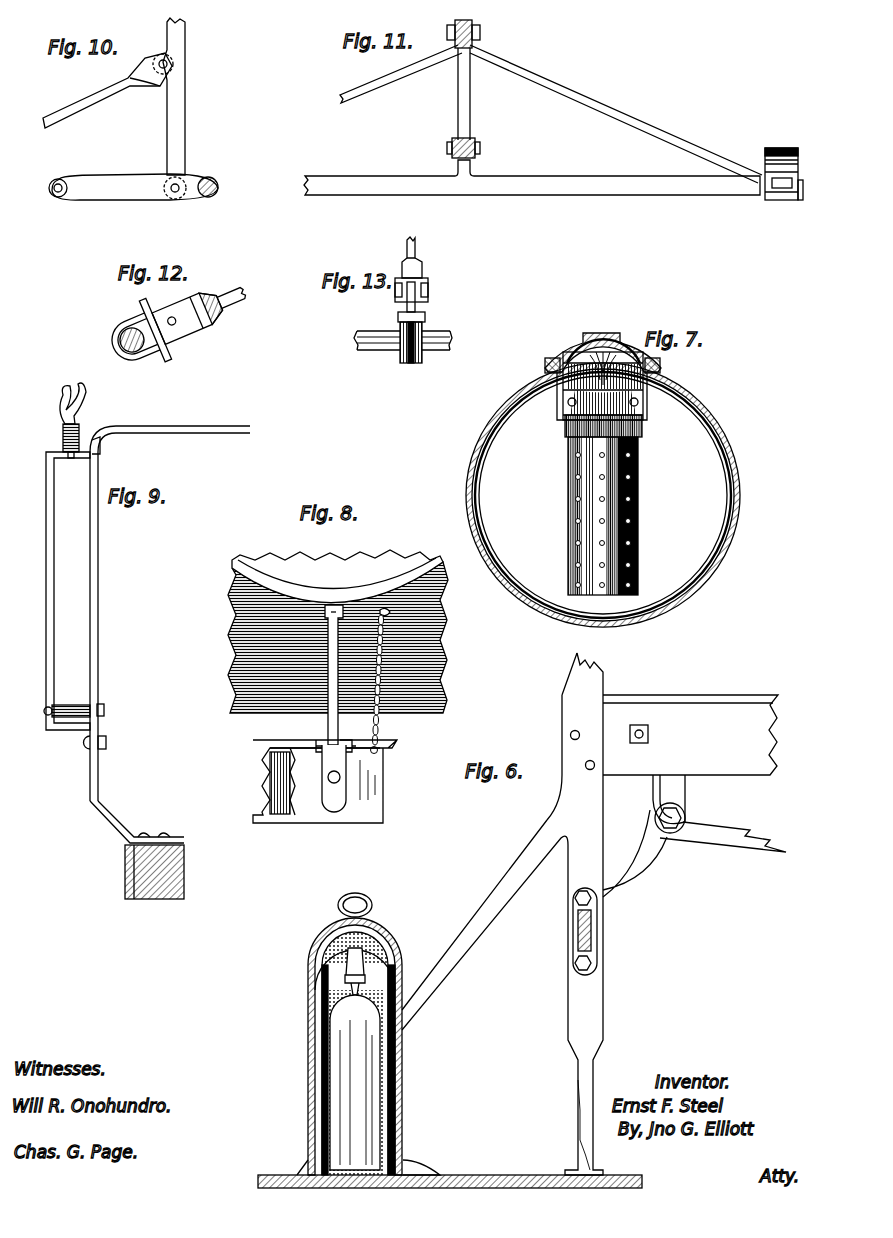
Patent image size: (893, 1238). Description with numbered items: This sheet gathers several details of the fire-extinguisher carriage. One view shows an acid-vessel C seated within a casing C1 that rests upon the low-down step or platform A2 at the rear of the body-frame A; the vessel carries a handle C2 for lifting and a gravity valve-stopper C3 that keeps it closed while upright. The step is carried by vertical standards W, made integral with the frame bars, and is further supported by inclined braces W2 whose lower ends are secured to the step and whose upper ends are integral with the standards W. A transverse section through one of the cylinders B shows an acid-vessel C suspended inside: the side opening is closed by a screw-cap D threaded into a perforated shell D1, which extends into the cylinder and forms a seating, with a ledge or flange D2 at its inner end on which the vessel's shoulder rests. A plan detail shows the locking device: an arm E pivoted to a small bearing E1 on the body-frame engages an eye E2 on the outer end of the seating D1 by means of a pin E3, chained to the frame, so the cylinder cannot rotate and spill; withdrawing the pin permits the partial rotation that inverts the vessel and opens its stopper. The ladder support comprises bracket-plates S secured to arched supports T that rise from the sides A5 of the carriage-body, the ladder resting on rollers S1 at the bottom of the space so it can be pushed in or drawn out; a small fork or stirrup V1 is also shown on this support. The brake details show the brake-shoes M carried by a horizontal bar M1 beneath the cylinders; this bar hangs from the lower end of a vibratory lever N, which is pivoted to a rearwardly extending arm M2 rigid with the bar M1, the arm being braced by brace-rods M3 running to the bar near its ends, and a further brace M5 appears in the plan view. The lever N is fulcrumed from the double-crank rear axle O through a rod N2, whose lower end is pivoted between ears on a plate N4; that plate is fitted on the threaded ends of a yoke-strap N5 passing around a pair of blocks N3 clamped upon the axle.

In FIG. 10, the vibratory lever N is at (181, 117).
In FIG. 11, the vibratory lever N is at (453, 152).
In FIG. 10, the fulcrum-rod N2 is at (78, 118).
In FIG. 12, the fulcrum-rod N2 is at (243, 312).
In FIG. 13, the fulcrum-rod N2 is at (417, 252).
In FIG. 12, the blocks N3 is at (160, 345).
In FIG. 12, the plate N4 is at (181, 298).
In FIG. 12, the yoke-strap N5 is at (121, 356).
In FIG. 12, the rear axle O is at (113, 336).
In FIG. 10, the brake-shoes M is at (218, 187).
In FIG. 11, the brake-shoes M is at (777, 164).
In FIG. 11, the brake-shoe bar M1 is at (532, 172).
In FIG. 10, the arm M2 is at (112, 198).
In FIG. 11, the arm M2 is at (470, 112).
In FIG. 11, the brace-rods M3 is at (399, 74).
In FIG. 11, the brace M5 is at (616, 114).
In FIG. 7, the cylinders B is at (606, 495).
In FIG. 8, the cylinders B is at (342, 637).
In FIG. 7, the acid-vessel C is at (611, 505).
In FIG. 6, the acid-vessel C is at (355, 1082).
In FIG. 6, the casing C1 is at (306, 985).
In FIG. 7, the handle C2 is at (610, 350).
In FIG. 6, the handle C2 is at (372, 922).
In FIG. 6, the gravity valve-stopper C3 is at (366, 972).
In FIG. 7, the screw-cap D is at (603, 347).
In FIG. 8, the screw-cap D is at (337, 571).
In FIG. 7, the perforated shell D1 is at (545, 372).
In FIG. 8, the perforated shell D1 is at (352, 597).
In FIG. 7, the ledge or flange D2 is at (648, 420).
In FIG. 8, the arm E is at (325, 722).
In FIG. 8, the bearing E1 is at (333, 750).
In FIG. 8, the eye E2 is at (333, 603).
In FIG. 8, the pin E3 is at (376, 608).
In FIG. 9, the bracket-plates S is at (57, 591).
In FIG. 9, the rollers S1 is at (68, 705).
In FIG. 9, the supports T is at (170, 634).
In FIG. 9, the coupling V1 is at (86, 420).
In FIG. 6, the body-frame A is at (690, 723).
In FIG. 6, the step or platform A2 is at (450, 1170).
In FIG. 9, the sides of the carriage-body A5 is at (186, 870).
In FIG. 6, the sides of the carriage-body A5 is at (668, 728).
In FIG. 6, the standards W is at (604, 988).
In FIG. 6, the inclined braces W2 is at (475, 950).